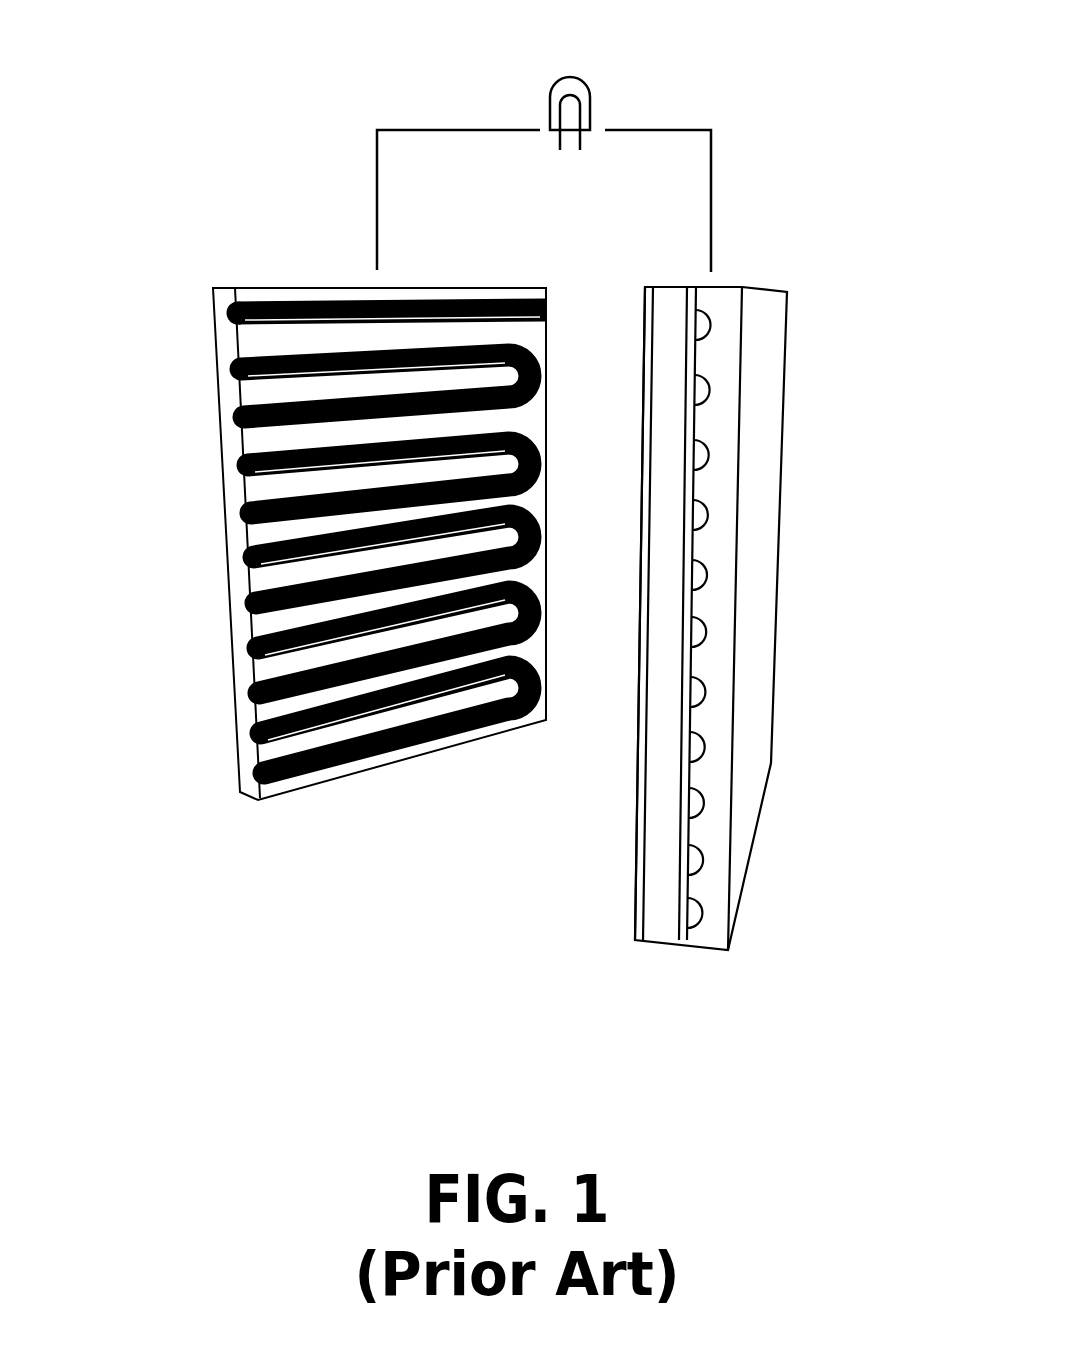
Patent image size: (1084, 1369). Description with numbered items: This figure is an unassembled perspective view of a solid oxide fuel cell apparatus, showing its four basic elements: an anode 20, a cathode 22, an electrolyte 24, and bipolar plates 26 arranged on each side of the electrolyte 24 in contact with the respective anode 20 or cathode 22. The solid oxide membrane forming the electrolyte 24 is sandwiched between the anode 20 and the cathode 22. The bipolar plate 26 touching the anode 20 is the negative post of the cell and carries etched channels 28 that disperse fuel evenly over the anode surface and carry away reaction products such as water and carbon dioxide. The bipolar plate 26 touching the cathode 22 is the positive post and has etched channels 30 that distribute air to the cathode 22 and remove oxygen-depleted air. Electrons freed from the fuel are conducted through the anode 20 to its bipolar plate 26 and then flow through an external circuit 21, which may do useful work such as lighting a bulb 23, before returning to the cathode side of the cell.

The anode 20 is at (242, 632).
The external circuit 21 is at (431, 130).
The cathode 22 is at (753, 603).
The bulb 23 is at (550, 95).
The electrolyte 24 is at (667, 648).
The bipolar plates 26 is at (680, 937).
The channels 28 is at (240, 453).
The channels 30 is at (715, 330).